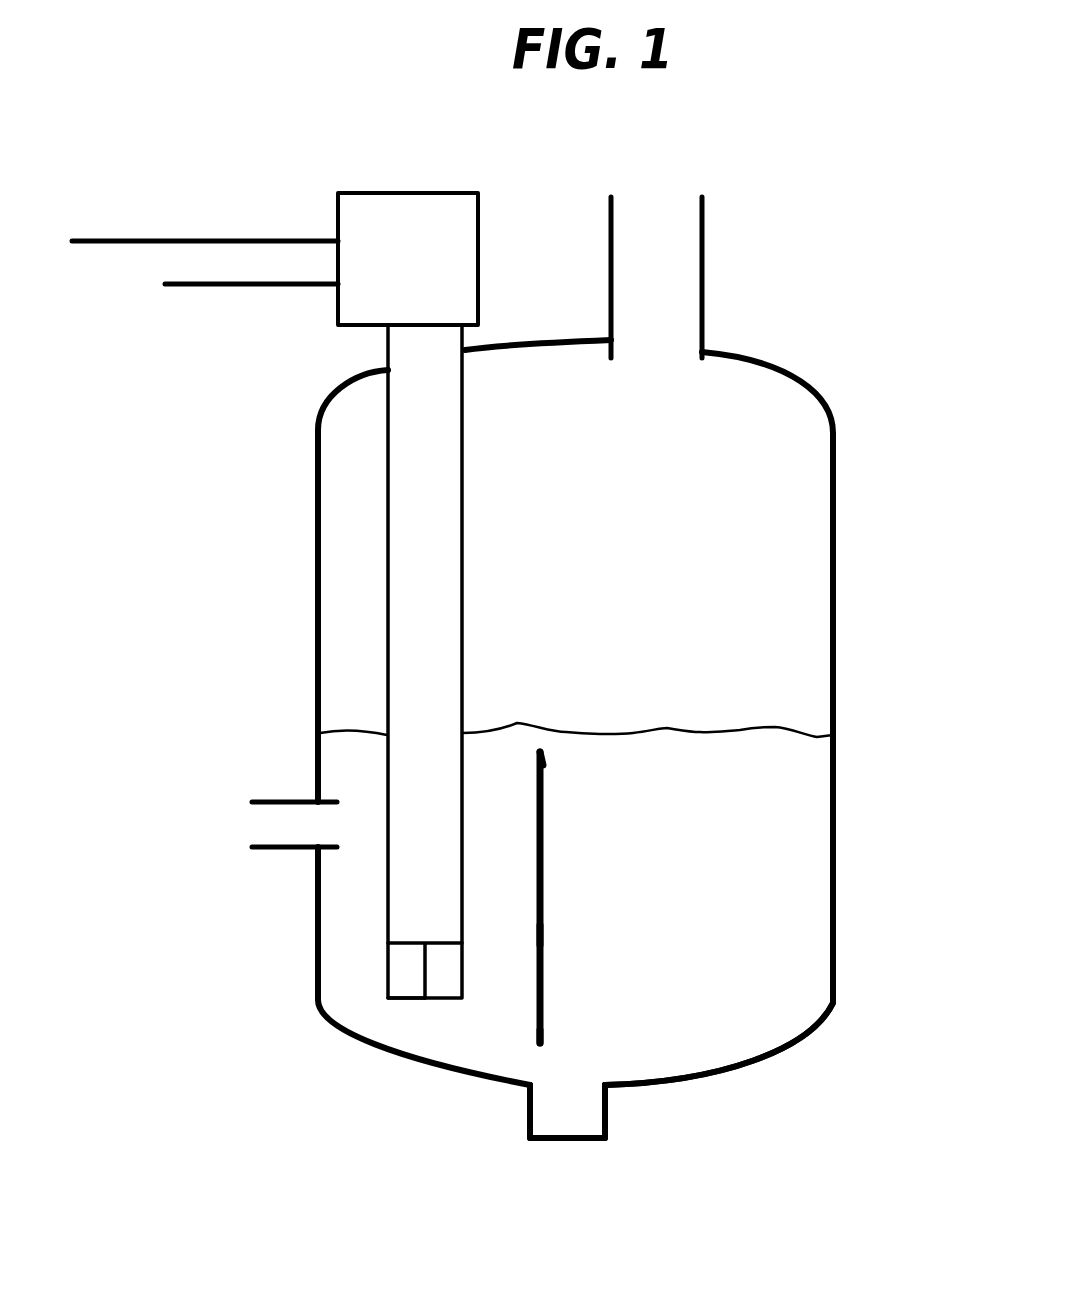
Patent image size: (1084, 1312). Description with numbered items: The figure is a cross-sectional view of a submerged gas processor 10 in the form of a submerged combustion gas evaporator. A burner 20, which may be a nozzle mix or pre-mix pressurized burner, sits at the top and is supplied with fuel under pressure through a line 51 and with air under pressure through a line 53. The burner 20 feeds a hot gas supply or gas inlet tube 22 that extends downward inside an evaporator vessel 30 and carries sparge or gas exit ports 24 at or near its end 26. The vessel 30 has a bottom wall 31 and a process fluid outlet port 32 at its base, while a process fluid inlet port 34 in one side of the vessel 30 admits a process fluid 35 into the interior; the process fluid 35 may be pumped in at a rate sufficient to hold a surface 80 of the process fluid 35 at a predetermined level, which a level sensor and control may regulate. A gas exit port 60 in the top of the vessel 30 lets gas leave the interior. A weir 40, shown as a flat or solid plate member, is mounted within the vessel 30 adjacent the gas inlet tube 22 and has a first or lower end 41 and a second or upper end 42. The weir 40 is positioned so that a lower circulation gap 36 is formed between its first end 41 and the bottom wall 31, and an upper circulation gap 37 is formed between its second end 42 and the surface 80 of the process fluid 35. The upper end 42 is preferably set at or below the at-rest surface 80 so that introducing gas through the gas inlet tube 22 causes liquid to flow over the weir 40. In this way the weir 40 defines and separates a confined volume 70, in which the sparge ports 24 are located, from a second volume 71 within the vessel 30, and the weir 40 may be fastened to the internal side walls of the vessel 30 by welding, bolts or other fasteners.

The submerged gas processor 10 is at (285, 682).
The burner 20 is at (360, 297).
The gas inlet tube 22 is at (410, 532).
The gas exit ports 24 is at (388, 978).
The end 26 is at (398, 1002).
The evaporator vessel 30 is at (833, 460).
The bottom wall 31 is at (697, 1082).
The process fluid outlet port 32 is at (568, 1113).
The process fluid inlet port 34 is at (252, 845).
The process fluid 35 is at (812, 762).
The lower circulation gap 36 is at (540, 1052).
The upper circulation gap 37 is at (525, 748).
The weir 40 is at (543, 935).
The first end 41 is at (545, 1045).
The second end 42 is at (540, 752).
The line 51 is at (92, 243).
The line 53 is at (190, 288).
The gas exit port 60 is at (660, 250).
The confined volume 70 is at (510, 1012).
The volume 71 is at (795, 861).
The surface 80 is at (757, 727).